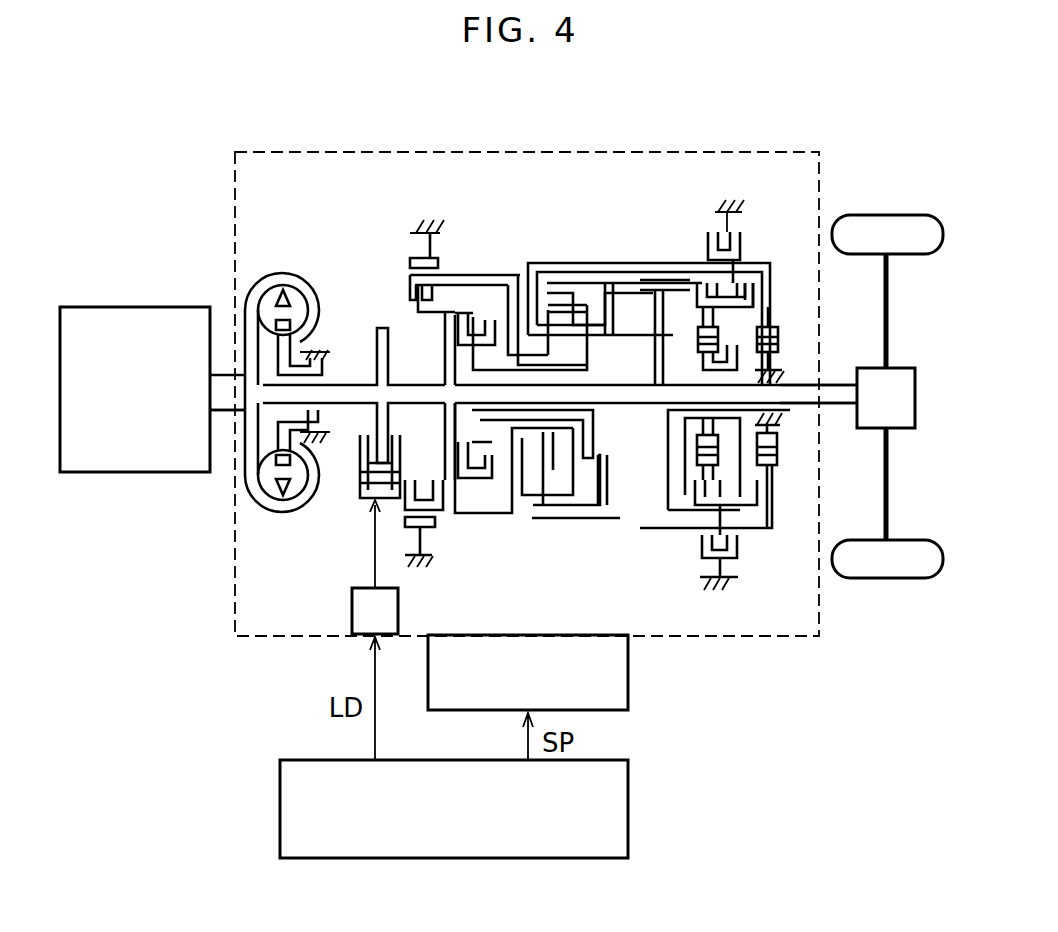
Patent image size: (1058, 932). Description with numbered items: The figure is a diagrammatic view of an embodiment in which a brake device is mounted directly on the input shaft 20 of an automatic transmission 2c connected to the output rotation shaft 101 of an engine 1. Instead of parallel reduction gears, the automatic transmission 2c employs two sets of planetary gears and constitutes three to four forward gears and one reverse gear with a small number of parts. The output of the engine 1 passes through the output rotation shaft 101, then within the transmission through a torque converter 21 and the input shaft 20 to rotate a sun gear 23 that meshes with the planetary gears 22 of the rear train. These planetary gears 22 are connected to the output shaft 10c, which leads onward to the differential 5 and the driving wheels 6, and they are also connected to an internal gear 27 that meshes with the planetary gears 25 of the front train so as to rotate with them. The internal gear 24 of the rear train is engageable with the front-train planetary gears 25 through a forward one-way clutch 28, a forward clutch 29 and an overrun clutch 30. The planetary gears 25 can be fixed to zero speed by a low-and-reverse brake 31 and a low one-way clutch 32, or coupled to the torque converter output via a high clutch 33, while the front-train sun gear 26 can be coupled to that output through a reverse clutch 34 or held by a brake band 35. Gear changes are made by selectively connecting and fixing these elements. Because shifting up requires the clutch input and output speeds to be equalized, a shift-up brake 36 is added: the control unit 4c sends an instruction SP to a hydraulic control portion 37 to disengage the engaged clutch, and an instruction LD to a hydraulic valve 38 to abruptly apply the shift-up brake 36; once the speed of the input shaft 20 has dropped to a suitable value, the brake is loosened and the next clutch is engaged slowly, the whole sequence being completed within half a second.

The engine 1 is at (148, 307).
The output rotation shaft 101 is at (225, 414).
The torque converter 21 is at (278, 272).
The input shaft 20 is at (345, 383).
The reverse clutch 34 is at (410, 292).
The brake band 35 is at (440, 258).
The high clutch 33 is at (492, 325).
The forward one-way clutch 28 is at (697, 337).
The forward clutch 29 is at (707, 283).
The low-and-reverse brake 31 is at (743, 250).
The overrun clutch 30 is at (750, 287).
The low one-way clutch 32 is at (780, 335).
The shift-up brake 36 is at (360, 458).
The planetary gears of the front train 25 is at (535, 495).
The internal gear 27 is at (535, 500).
The sun gear of the front train 26 is at (571, 458).
The planetary gears of the rear train 22 is at (620, 498).
The internal gear of the rear train 24 is at (640, 515).
The sun gear 23 is at (665, 440).
The output shaft 10c is at (840, 406).
The differential gear 5 is at (902, 430).
The driving wheels 6 is at (897, 215).
The hydraulic valve 38 is at (398, 607).
The hydraulic control portion 37 is at (628, 678).
The control unit 4c is at (628, 803).
The automatic transmission 2c is at (755, 637).